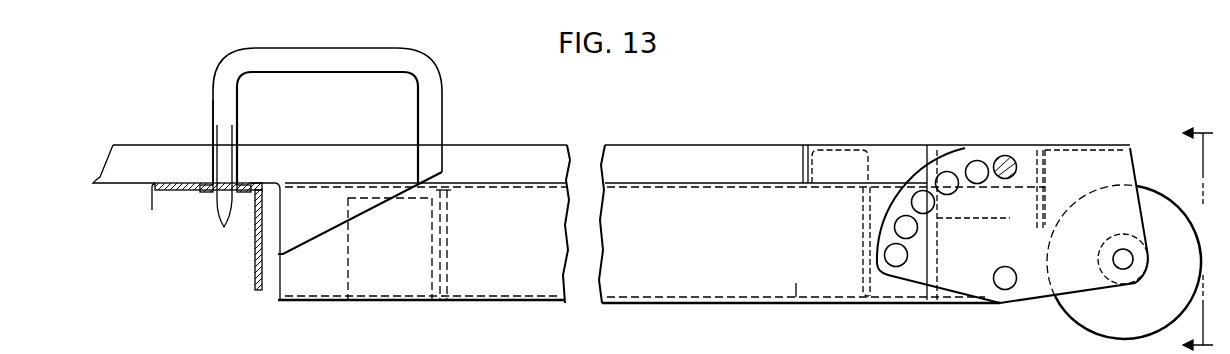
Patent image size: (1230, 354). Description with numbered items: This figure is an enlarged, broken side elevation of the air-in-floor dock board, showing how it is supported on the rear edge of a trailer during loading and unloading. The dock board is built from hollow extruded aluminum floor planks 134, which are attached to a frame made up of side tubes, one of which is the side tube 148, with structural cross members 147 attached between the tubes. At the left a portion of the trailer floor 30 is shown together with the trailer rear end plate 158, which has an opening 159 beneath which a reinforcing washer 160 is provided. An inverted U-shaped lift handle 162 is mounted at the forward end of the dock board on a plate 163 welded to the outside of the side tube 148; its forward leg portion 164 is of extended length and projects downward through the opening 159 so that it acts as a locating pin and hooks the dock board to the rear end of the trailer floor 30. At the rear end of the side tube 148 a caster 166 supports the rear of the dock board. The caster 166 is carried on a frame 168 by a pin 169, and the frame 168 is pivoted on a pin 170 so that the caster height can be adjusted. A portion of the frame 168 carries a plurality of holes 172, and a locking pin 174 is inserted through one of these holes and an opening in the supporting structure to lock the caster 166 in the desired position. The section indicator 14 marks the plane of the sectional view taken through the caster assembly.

The trailer floor 30 is at (138, 146).
The floor plank 134 is at (517, 146).
The structural cross member 147 is at (446, 238).
The side tube 148 is at (530, 293).
The trailer rear end plate 158 is at (152, 199).
The opening 159 is at (232, 180).
The reinforcing washer 160 is at (205, 193).
The lift handle 162 is at (333, 57).
The plate 163 is at (366, 204).
The forward leg portion 164 is at (214, 103).
The caster 166 is at (1075, 306).
The frame 168 is at (1082, 162).
The pin 169 is at (1120, 257).
The pin 170 is at (1003, 283).
The holes 172 is at (893, 254).
The locking pin 174 is at (1010, 160).
The section line 14- 14 is at (1198, 232).